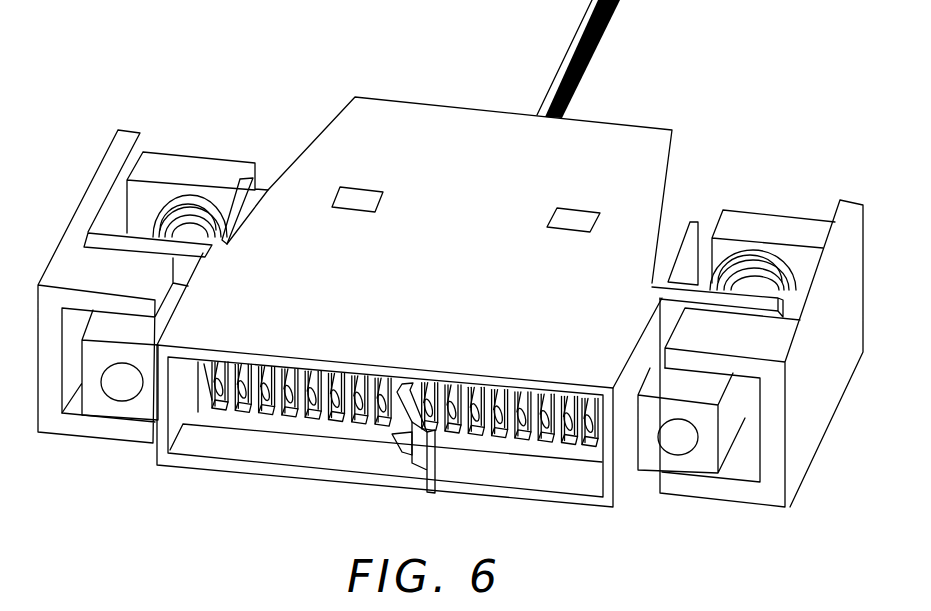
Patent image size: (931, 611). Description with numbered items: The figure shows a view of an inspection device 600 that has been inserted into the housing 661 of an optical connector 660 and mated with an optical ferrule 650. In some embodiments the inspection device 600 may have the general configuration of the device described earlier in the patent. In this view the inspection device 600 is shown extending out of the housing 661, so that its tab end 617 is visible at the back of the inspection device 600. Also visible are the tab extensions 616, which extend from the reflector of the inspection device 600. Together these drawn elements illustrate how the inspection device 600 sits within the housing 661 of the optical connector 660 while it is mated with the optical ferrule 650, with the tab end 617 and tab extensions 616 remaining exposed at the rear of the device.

The optical connector 660 is at (245, 67).
The housing 661 is at (687, 228).
The inspection device 600 is at (372, 362).
The optical ferrule 650 is at (437, 390).
The tab extensions 616 is at (402, 390).
The tab end 617 is at (428, 470).